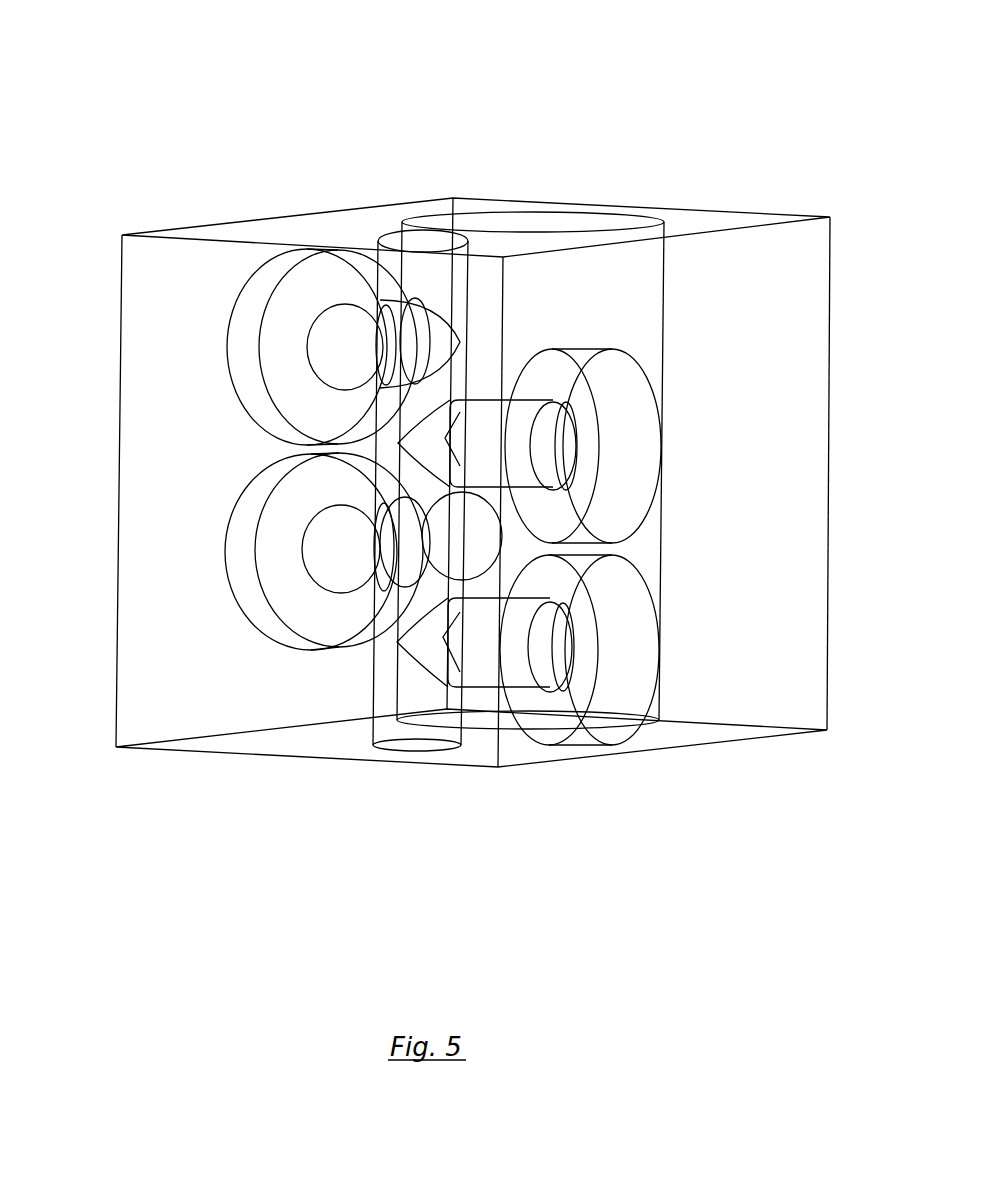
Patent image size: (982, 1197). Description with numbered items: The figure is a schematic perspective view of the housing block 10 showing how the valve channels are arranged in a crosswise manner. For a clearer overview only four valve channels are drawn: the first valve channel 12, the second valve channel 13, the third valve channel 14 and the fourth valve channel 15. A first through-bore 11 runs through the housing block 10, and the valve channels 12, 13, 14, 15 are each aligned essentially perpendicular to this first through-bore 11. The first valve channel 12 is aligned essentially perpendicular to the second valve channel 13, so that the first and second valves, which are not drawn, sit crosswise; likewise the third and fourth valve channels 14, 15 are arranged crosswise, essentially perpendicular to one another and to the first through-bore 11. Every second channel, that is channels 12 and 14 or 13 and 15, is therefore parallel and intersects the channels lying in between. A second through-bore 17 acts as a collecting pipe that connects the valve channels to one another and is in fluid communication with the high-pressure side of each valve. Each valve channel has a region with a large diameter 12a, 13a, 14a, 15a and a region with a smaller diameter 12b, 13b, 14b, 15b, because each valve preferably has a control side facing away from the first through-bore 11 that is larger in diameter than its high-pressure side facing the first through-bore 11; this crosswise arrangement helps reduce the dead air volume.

The housing block 10 is at (172, 49).
The first through-bore 11 is at (508, 426).
The second through-bore 17 is at (358, 450).
The first valve channel 12 is at (252, 309).
The large diameter region of first valve channel 12a is at (231, 347).
The smaller diameter region of first valve channel 12b is at (305, 281).
The second valve channel 13 is at (586, 446).
The large diameter region of second valve channel 13a is at (640, 446).
The smaller diameter region of second valve channel 13b is at (579, 445).
The third valve channel 14 is at (261, 502).
The large diameter region of third valve channel 14a is at (227, 551).
The smaller diameter region of third valve channel 14b is at (261, 474).
The fourth valve channel 15 is at (535, 700).
The large diameter region of fourth valve channel 15a is at (586, 693).
The smaller diameter region of fourth valve channel 15b is at (485, 722).